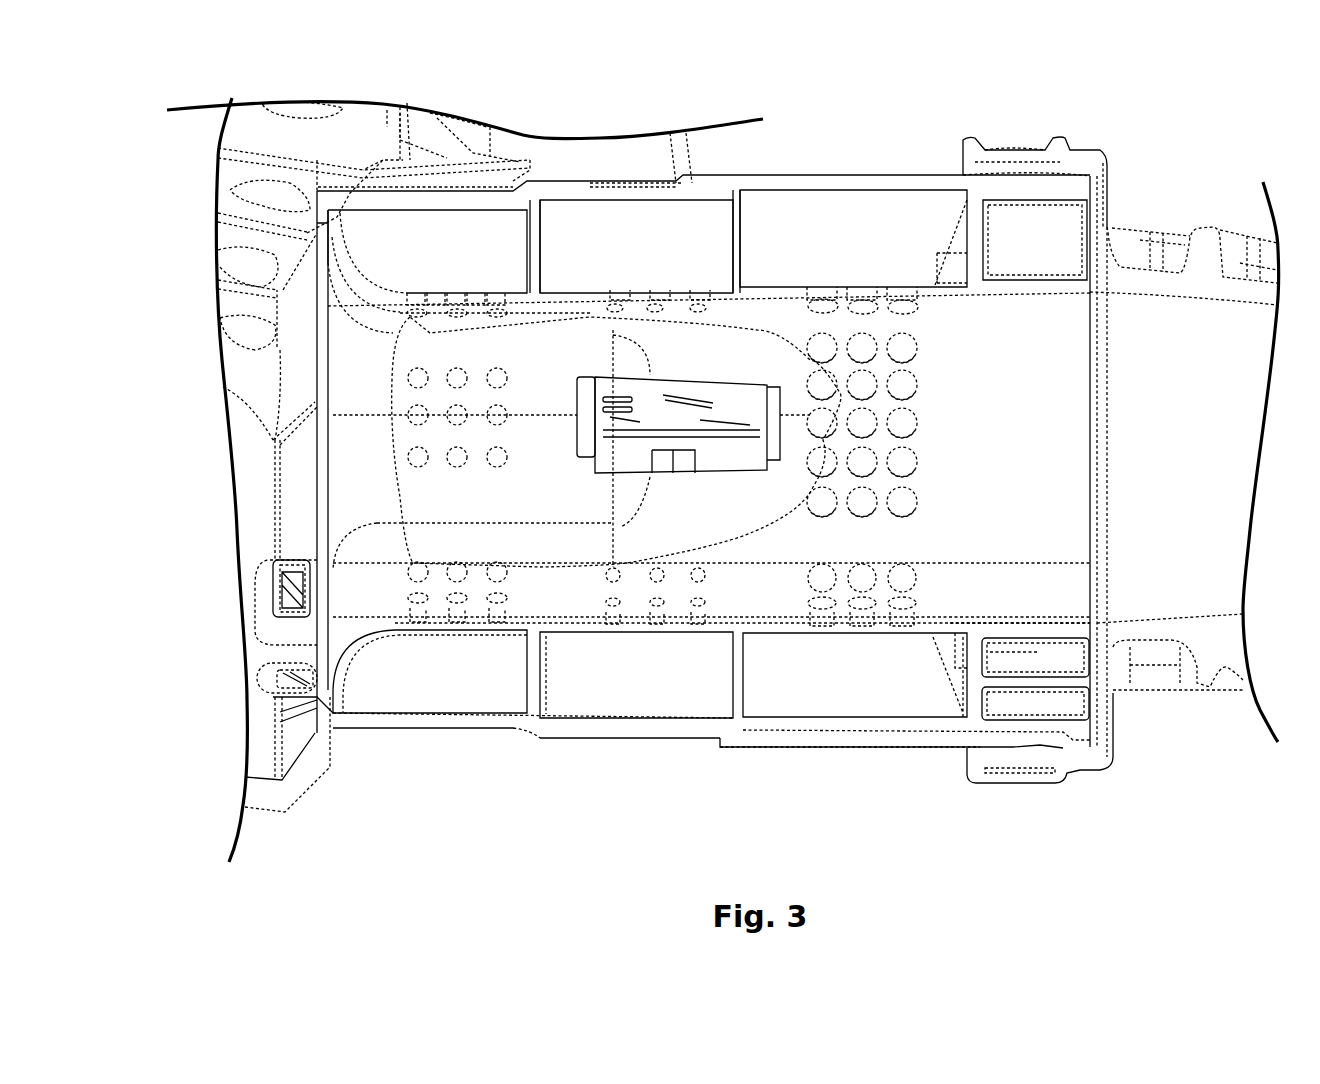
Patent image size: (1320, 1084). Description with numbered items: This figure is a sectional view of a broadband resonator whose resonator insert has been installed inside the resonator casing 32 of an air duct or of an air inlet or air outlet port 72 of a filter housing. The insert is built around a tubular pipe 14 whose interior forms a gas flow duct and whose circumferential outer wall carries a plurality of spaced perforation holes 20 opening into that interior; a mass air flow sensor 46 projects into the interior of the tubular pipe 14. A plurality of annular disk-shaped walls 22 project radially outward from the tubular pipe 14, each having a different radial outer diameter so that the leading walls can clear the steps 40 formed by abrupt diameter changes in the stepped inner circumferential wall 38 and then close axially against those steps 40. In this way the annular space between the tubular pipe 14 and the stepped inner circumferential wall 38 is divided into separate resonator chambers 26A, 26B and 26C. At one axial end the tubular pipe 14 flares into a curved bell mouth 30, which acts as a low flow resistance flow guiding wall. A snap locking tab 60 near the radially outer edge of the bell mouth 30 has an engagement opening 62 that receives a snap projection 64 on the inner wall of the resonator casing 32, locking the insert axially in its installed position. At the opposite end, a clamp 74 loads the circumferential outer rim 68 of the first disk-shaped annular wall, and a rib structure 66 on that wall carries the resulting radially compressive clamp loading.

The tubular pipe 14 is at (963, 620).
The perforation holes 20 is at (908, 424).
The annular disk-shaped walls 22 is at (528, 673).
The resonator chamber 26A is at (470, 261).
The resonator chamber 26B is at (612, 251).
The resonator chamber 26C is at (813, 244).
The bell mouth 30 is at (363, 290).
The resonator casing 32 is at (860, 750).
The stepped inner circumferential wall 38 is at (628, 180).
The steps 40 is at (525, 730).
The mass air flow sensor 46 is at (633, 458).
The snap locking tab 60 is at (270, 563).
The engagement opening 62 is at (298, 563).
The snap projection 64 is at (290, 596).
The rib structure 66 is at (1057, 682).
The circumferential outer rim 68 is at (1070, 730).
The air inlet or air outlet port 72 is at (393, 730).
The clamp 74 is at (1030, 147).